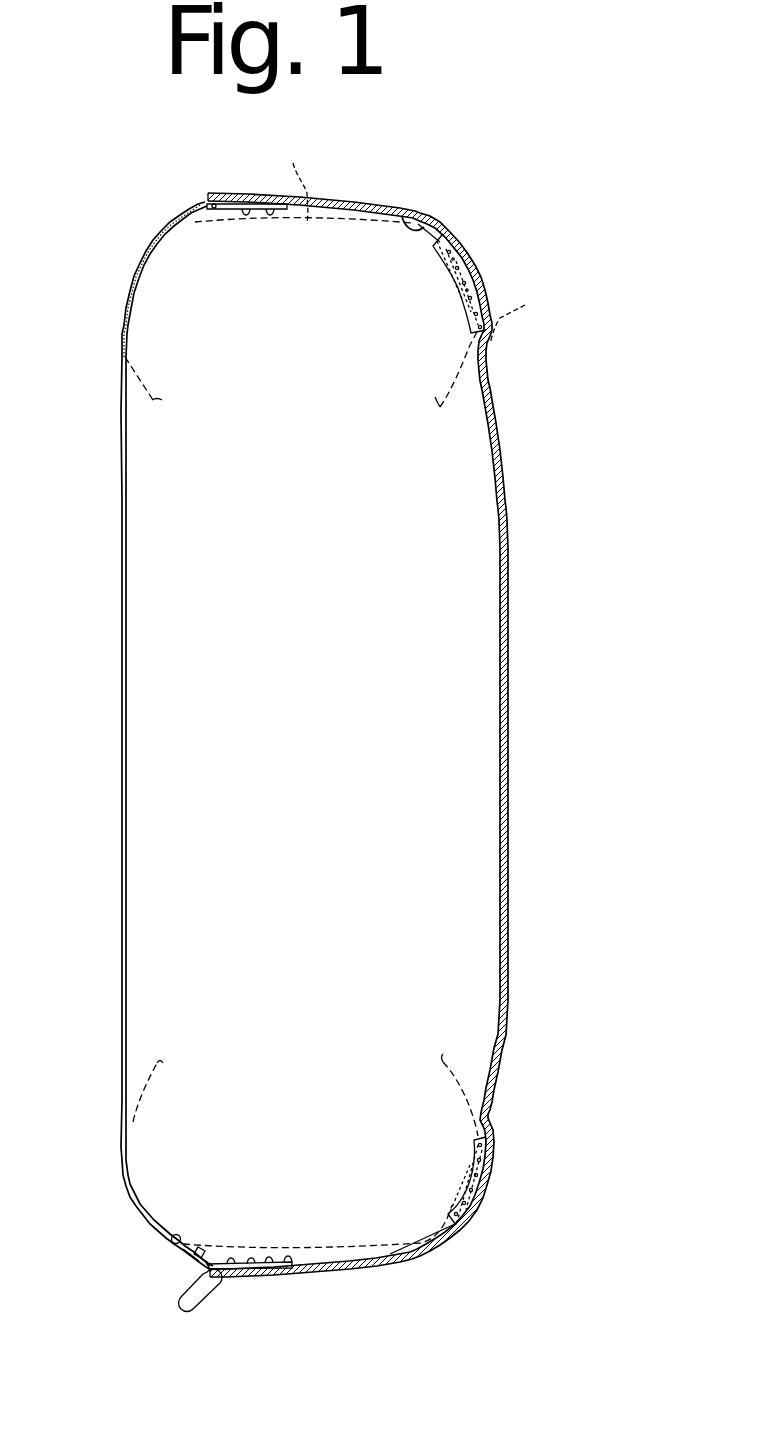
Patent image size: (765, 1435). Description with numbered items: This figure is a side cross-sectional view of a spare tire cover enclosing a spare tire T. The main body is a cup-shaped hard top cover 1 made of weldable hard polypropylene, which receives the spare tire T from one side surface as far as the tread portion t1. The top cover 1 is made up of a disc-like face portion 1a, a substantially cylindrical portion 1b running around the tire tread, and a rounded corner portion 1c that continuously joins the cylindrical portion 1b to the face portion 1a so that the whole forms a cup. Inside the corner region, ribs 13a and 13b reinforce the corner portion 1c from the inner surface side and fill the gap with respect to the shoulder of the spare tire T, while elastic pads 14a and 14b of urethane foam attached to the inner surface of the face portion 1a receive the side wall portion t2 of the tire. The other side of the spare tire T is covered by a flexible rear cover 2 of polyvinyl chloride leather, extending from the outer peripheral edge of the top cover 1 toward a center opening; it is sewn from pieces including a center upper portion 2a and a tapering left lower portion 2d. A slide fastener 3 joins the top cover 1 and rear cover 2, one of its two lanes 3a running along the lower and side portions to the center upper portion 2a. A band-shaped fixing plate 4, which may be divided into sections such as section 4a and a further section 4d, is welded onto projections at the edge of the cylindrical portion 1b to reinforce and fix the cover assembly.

The top cover 1 is at (510, 518).
The face portion 1a is at (509, 703).
The cylindrical portion 1b is at (348, 203).
The corner portion 1c is at (401, 215).
The rear cover 2 is at (168, 221).
The center upper portion 2a is at (180, 218).
The left lower portion 2d is at (176, 1256).
The slide fastener 3 is at (192, 1271).
The lane of slide fastener 3a is at (207, 1258).
The fixing plate 4 is at (230, 219).
The section of fixing plate 4a is at (282, 210).
The lower fastening plate 4d is at (243, 1262).
The rib 13a is at (440, 243).
The elastic pad 14a is at (468, 303).
The rib 13b is at (433, 1233).
The elastic pad 14b is at (468, 1180).
The spare tire T is at (130, 379).
The tread portion t1 is at (294, 179).
The side wall portion t2 is at (520, 317).